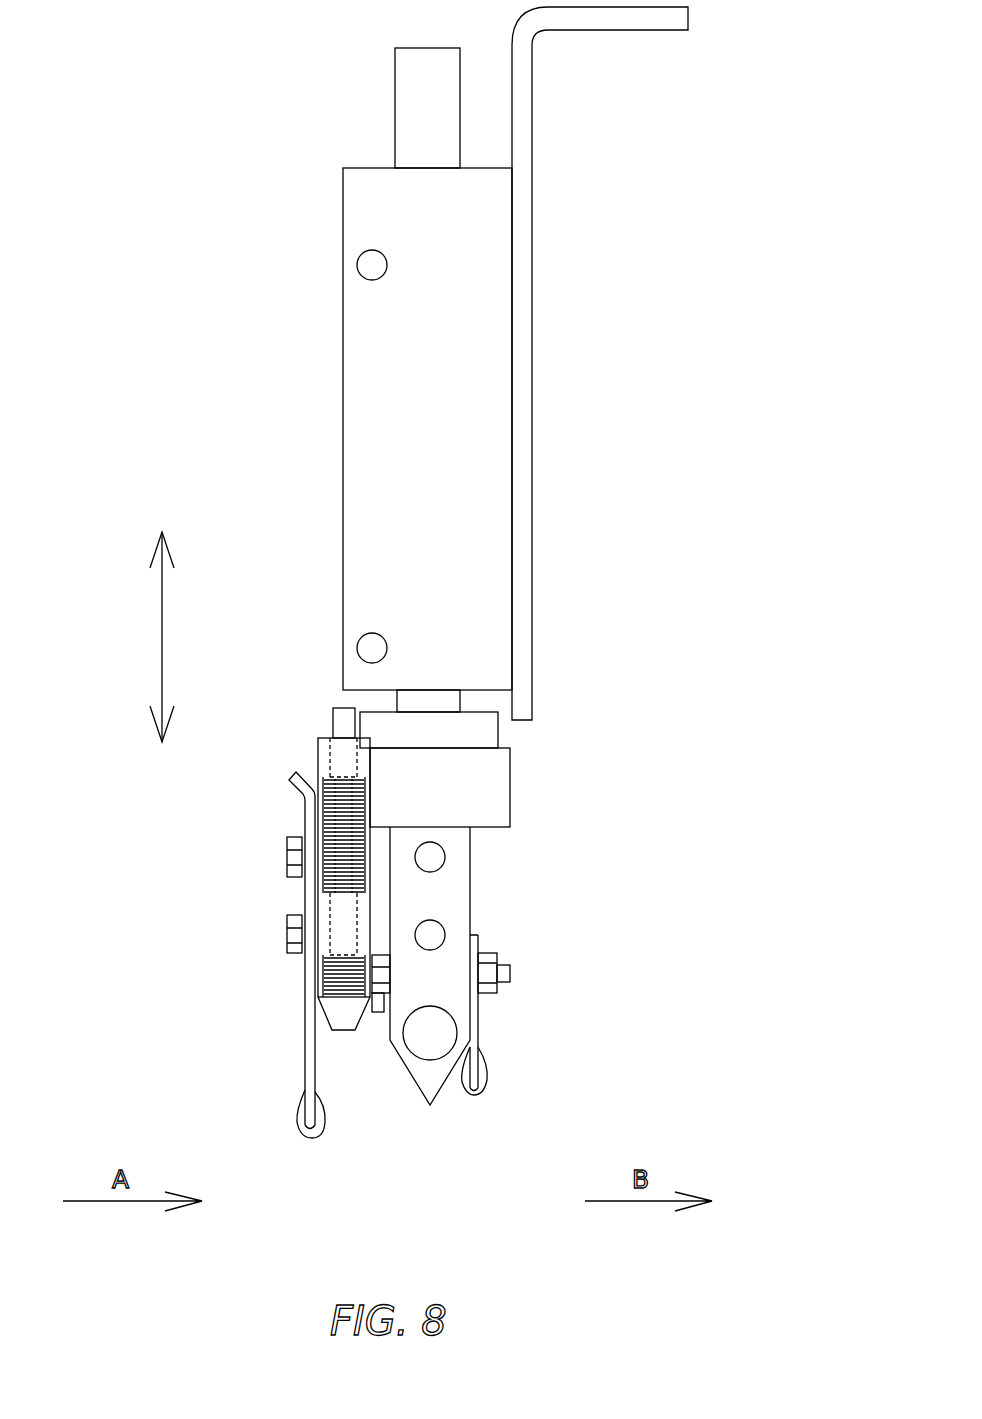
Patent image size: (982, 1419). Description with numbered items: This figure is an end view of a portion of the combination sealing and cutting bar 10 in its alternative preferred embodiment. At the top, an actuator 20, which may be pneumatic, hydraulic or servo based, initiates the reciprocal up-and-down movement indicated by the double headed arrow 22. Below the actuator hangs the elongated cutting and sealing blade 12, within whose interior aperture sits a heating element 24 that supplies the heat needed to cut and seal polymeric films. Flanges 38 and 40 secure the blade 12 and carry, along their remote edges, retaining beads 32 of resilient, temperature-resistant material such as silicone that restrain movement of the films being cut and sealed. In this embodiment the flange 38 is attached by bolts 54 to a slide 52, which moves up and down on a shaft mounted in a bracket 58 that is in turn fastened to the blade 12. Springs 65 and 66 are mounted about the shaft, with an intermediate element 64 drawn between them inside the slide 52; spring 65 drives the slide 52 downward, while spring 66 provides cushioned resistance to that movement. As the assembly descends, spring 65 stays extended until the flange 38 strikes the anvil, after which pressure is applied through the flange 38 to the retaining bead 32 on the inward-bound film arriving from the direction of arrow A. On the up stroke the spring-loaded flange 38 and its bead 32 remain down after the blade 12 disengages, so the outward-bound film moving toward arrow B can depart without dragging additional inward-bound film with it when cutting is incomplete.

The combination sealing and cutting bar 10 is at (662, 438).
The cutting and sealing blade 12 is at (450, 897).
The actuator 20 is at (482, 333).
The double headed arrow 22 is at (162, 637).
The heating element 24 is at (415, 1042).
The retaining bead 32 is at (310, 1133).
The flange 38 is at (310, 1063).
The flange 40 is at (475, 1022).
The slide 52 is at (360, 937).
The bolts 54 is at (287, 935).
The bracket 58 is at (320, 750).
The piston 64 is at (342, 930).
The spring 65 is at (333, 820).
The spring 66 is at (345, 978).